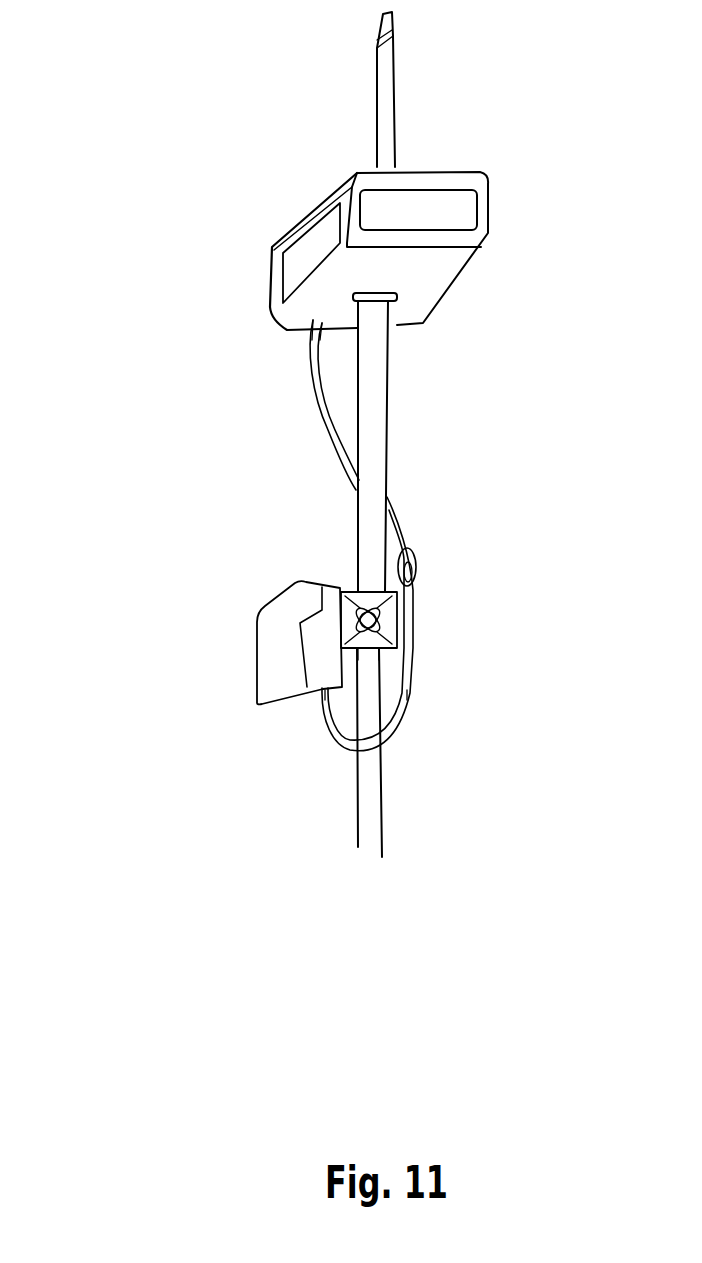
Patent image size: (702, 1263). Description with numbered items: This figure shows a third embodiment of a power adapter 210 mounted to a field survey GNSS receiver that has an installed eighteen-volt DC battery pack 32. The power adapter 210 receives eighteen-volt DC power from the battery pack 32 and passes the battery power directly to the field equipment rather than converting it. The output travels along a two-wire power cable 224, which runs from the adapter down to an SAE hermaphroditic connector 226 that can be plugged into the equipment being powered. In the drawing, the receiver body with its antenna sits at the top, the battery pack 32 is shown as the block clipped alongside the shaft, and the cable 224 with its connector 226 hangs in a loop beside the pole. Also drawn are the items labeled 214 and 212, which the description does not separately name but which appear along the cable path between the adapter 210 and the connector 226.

The power adapter 210 is at (153, 503).
The cable 214 is at (353, 590).
The SAE hermaphroditic connector 226 is at (420, 568).
The two-wire power cable 224 is at (410, 633).
The battery pack 32 is at (243, 655).
The cable loop 212 is at (318, 697).